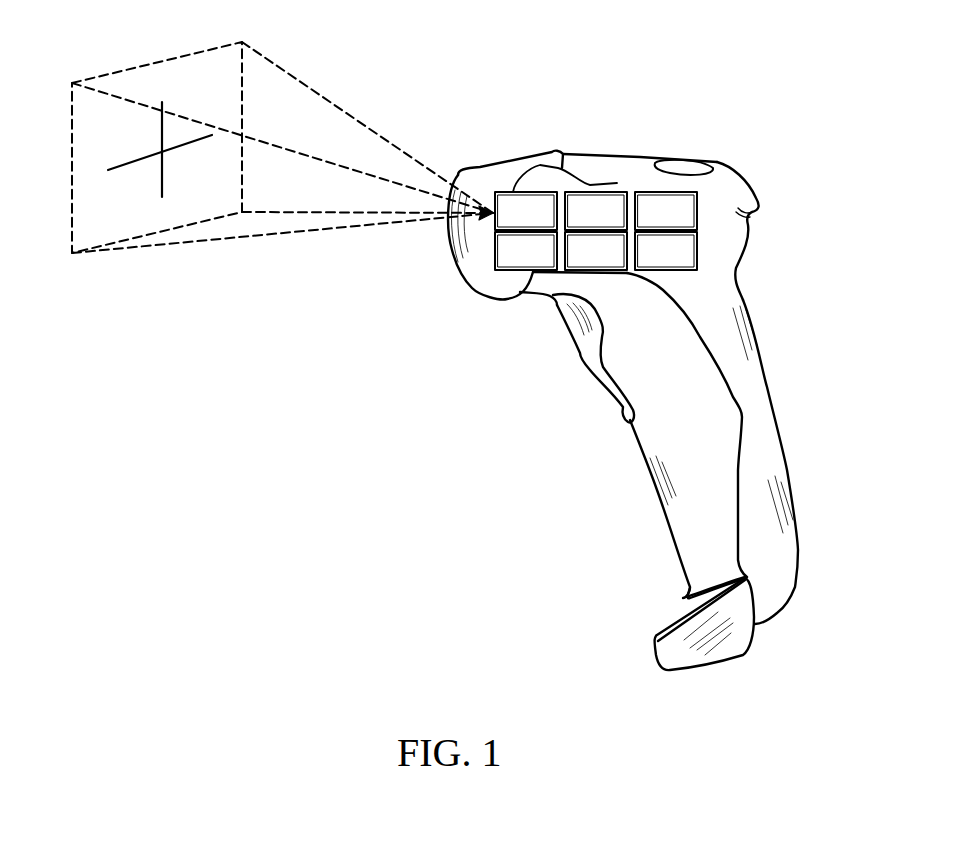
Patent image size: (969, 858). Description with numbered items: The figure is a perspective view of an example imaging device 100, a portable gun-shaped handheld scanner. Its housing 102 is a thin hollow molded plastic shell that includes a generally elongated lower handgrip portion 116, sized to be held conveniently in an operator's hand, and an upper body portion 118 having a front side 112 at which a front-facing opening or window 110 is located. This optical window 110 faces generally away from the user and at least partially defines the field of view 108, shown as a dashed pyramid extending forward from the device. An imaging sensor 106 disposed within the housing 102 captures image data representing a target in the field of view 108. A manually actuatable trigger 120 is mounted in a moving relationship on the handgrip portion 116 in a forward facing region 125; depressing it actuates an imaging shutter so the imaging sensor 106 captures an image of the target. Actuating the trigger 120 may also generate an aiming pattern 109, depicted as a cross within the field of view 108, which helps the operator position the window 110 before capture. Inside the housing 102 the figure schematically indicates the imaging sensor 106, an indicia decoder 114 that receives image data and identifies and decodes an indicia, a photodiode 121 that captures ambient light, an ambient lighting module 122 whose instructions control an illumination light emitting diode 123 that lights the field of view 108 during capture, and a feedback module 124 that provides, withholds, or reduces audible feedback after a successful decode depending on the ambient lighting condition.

The imaging device 100 is at (738, 50).
The housing 102 is at (530, 153).
The imaging sensor 106 is at (552, 225).
The field of view 108 is at (280, 67).
The aiming pattern 109 is at (135, 163).
The front-facing opening or window 110 is at (455, 248).
The front side 112 is at (423, 293).
The indicia decoder 114 is at (622, 225).
The handgrip portion 116 is at (773, 407).
The upper body portion 118 is at (730, 187).
The trigger 120 is at (587, 364).
The photodiode 121 is at (692, 225).
The ambient lighting module 122 is at (552, 263).
The illumination light emitting diode 123 is at (622, 263).
The feedback module 124 is at (692, 263).
The forward facing region 125 is at (573, 472).